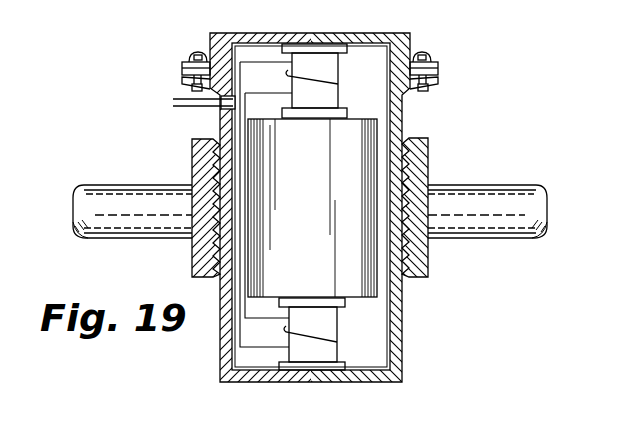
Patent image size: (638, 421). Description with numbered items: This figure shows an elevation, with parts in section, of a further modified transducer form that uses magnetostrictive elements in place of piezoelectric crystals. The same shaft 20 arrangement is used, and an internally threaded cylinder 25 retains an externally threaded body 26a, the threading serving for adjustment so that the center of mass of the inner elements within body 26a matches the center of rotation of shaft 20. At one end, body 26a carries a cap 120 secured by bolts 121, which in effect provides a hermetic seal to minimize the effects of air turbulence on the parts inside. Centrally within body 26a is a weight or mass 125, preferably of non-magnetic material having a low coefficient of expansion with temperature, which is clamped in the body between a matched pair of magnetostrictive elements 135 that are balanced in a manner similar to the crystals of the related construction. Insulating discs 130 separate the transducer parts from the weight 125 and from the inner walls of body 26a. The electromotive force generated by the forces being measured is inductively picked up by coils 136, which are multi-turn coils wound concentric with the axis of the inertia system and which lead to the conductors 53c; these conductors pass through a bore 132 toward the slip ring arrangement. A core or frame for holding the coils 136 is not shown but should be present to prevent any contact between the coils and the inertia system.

The cap 120 is at (265, 34).
The bolts 121 is at (196, 58).
The insulating discs 130 is at (316, 45).
The magnetostrictive elements 135 is at (344, 75).
The coils 136 is at (338, 91).
The weight or mass 125 is at (297, 155).
The shaft 20 is at (138, 173).
The internally threaded cylinder 25 is at (197, 264).
The externally threaded body 26a is at (397, 342).
The conductors 53c is at (195, 103).
The bore 132 is at (223, 108).